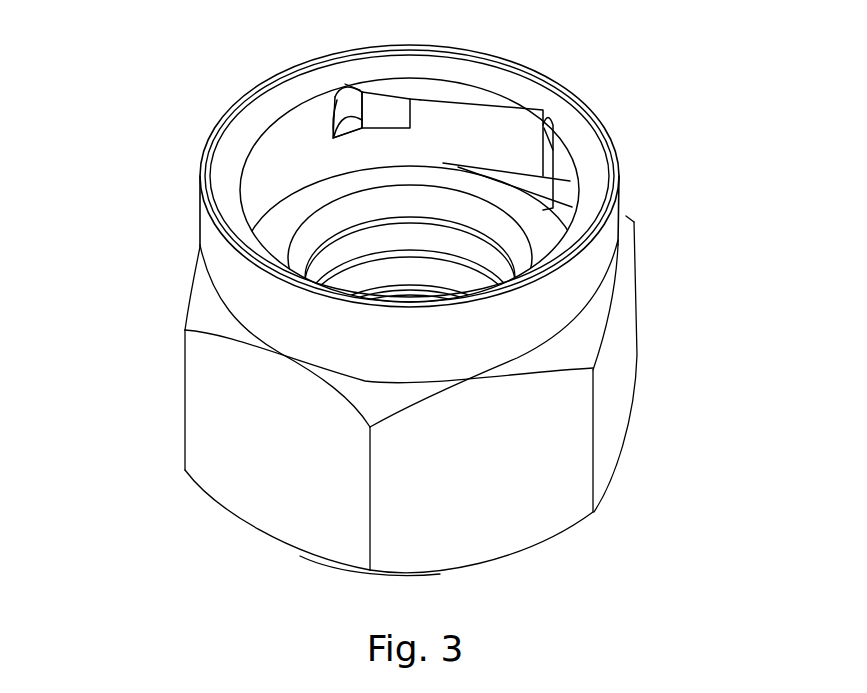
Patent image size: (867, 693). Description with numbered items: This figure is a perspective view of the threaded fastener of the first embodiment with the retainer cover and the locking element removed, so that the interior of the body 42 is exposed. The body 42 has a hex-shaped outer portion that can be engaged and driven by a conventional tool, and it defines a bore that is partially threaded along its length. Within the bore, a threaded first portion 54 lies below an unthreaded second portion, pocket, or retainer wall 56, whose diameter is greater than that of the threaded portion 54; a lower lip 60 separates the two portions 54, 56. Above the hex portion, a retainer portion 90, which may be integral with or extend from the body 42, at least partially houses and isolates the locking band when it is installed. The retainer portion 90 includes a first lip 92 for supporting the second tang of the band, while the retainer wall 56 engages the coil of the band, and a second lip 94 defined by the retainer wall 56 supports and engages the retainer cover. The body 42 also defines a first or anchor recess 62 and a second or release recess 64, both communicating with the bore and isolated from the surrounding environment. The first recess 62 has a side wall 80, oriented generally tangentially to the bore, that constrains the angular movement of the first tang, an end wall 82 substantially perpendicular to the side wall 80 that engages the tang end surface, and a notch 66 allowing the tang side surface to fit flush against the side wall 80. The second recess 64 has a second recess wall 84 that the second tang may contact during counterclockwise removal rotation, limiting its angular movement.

The body 42 is at (652, 323).
The first portion 54 is at (358, 277).
The retainer wall 56 is at (270, 184).
The lower lip 60 is at (272, 240).
The first recess 62 is at (354, 140).
The second recess 64 is at (507, 116).
The notch 66 is at (353, 90).
The side wall 80 is at (387, 102).
The end wall 82 is at (336, 96).
The second recess wall 84 is at (562, 128).
The retainer portion 90 is at (521, 334).
The first lip 92 is at (535, 190).
The second lip 94 is at (235, 161).